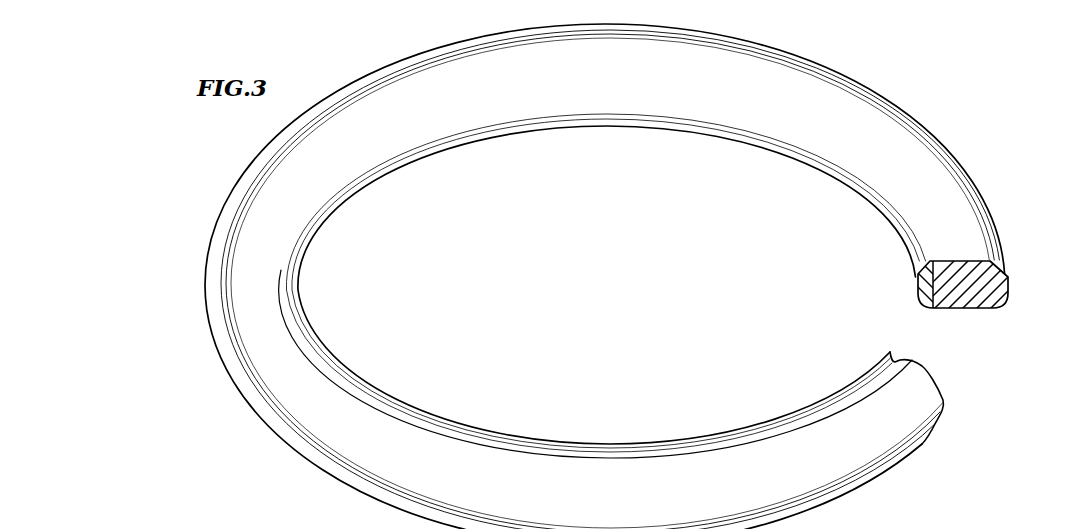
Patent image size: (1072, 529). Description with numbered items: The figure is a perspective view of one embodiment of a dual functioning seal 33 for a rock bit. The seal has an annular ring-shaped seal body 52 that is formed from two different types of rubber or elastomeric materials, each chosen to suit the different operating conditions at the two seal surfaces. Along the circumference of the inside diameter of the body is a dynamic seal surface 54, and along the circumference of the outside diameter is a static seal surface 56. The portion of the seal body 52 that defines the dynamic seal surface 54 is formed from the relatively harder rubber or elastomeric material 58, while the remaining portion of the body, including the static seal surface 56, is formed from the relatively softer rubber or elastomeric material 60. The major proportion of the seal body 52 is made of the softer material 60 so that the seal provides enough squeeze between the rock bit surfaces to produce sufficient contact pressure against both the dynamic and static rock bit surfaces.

The dual functioning seal 33 is at (990, 169).
The seal body 52 is at (888, 143).
The dynamic seal surface 54 is at (858, 382).
The static seal surface 56 is at (992, 243).
The relatively harder rubber or elastomeric material 58 is at (916, 280).
The relatively softer rubber or elastomeric material 60 is at (977, 288).